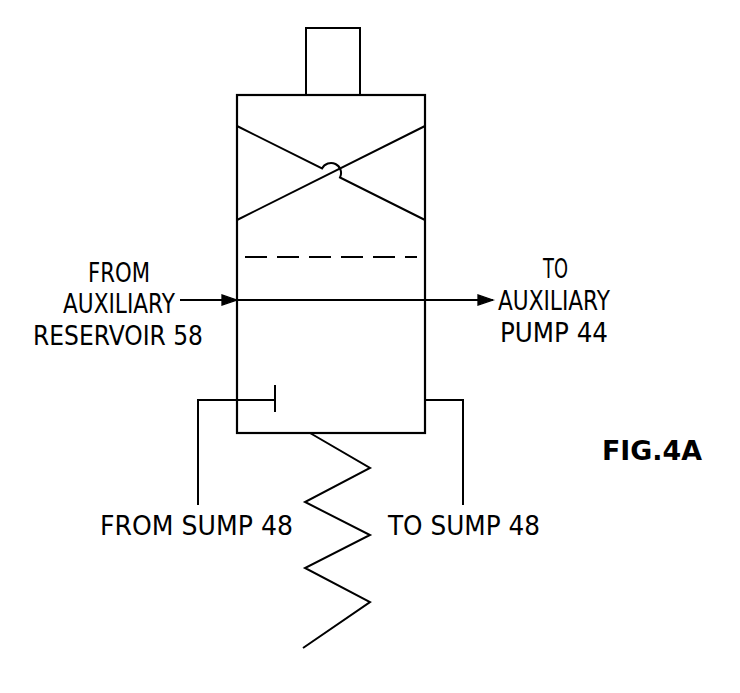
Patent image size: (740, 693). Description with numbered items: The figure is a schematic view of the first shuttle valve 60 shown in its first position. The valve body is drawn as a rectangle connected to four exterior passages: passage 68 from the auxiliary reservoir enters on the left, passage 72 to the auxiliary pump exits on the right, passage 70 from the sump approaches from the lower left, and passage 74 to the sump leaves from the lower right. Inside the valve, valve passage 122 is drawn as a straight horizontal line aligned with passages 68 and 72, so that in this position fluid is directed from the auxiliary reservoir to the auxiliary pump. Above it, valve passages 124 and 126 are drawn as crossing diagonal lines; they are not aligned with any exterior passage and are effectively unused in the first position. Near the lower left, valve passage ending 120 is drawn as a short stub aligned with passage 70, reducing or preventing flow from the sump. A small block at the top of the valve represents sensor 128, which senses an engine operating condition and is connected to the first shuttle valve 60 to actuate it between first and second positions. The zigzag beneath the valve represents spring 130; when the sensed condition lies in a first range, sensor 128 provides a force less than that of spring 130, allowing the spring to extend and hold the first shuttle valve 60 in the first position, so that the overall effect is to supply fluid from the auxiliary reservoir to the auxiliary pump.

The first shuttle valve 60 is at (233, 82).
The sensor 128 is at (360, 58).
The valve passage 126 is at (285, 150).
The valve passage 124 is at (287, 195).
The valve passage 122 is at (298, 300).
The passage 68 is at (210, 297).
The passage 72 is at (445, 300).
The passage 70 is at (198, 455).
The valve passage ending 120 is at (255, 398).
The passage 74 is at (463, 457).
The spring 130 is at (358, 543).